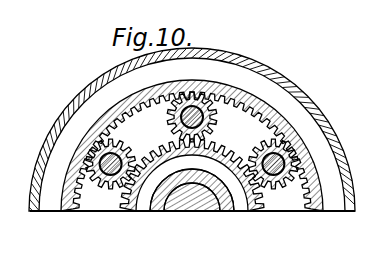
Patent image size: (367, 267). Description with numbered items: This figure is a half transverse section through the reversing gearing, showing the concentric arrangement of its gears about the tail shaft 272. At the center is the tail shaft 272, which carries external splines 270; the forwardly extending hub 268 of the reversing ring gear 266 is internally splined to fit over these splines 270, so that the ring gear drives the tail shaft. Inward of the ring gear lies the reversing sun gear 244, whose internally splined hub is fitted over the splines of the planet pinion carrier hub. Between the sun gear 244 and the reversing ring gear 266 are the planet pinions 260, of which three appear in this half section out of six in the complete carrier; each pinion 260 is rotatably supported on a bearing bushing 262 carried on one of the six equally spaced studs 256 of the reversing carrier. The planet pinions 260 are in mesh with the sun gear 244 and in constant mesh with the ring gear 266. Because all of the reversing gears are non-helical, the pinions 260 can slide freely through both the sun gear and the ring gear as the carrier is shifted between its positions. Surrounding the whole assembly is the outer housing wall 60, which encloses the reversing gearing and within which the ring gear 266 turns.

The housing ring 60 is at (268, 80).
The reversing ring gear 266 is at (316, 207).
The reversing sun gear 244 is at (253, 207).
The forwardly extending hub 268 is at (232, 209).
The tail shaft 272 is at (197, 206).
The external splines 270 is at (192, 206).
The studs 256 is at (172, 122).
The bearing bushings 262 is at (212, 116).
The planet pinions 260 is at (100, 182).